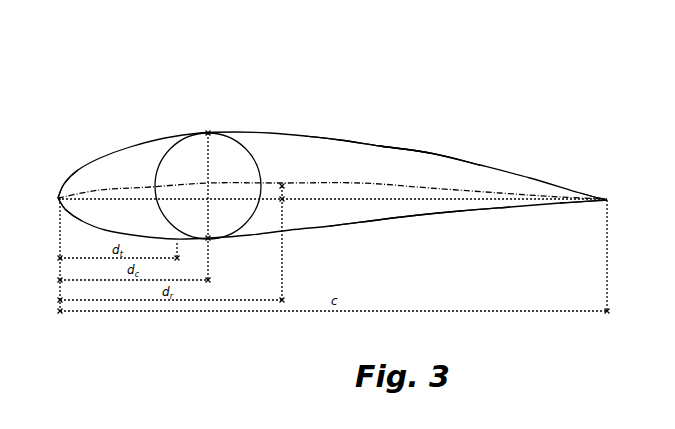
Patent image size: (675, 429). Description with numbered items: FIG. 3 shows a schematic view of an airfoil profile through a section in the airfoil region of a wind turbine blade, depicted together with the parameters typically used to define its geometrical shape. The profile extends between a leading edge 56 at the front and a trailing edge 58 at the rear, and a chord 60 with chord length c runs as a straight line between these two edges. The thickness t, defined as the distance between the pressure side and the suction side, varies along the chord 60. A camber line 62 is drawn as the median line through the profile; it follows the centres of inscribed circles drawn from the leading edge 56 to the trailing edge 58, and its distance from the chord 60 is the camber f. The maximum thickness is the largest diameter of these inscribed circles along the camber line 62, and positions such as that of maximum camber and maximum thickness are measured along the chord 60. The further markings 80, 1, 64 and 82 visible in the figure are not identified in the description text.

The airfoil profile 80 is at (315, 78).
The camber line reference point 1 is at (213, 172).
The chord 60 is at (468, 200).
The leading edge 56 is at (58, 199).
The trailing edge 58 is at (607, 200).
The camber line 62 is at (373, 143).
The aft suction side portion 64 is at (398, 146).
The pressure side surface 82 is at (440, 216).